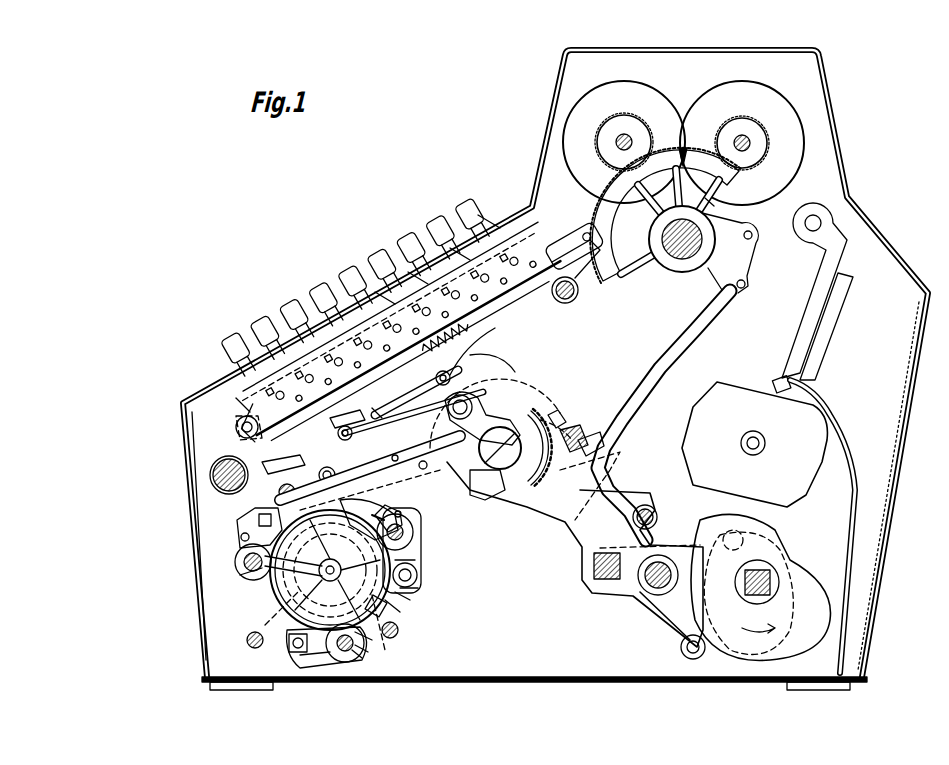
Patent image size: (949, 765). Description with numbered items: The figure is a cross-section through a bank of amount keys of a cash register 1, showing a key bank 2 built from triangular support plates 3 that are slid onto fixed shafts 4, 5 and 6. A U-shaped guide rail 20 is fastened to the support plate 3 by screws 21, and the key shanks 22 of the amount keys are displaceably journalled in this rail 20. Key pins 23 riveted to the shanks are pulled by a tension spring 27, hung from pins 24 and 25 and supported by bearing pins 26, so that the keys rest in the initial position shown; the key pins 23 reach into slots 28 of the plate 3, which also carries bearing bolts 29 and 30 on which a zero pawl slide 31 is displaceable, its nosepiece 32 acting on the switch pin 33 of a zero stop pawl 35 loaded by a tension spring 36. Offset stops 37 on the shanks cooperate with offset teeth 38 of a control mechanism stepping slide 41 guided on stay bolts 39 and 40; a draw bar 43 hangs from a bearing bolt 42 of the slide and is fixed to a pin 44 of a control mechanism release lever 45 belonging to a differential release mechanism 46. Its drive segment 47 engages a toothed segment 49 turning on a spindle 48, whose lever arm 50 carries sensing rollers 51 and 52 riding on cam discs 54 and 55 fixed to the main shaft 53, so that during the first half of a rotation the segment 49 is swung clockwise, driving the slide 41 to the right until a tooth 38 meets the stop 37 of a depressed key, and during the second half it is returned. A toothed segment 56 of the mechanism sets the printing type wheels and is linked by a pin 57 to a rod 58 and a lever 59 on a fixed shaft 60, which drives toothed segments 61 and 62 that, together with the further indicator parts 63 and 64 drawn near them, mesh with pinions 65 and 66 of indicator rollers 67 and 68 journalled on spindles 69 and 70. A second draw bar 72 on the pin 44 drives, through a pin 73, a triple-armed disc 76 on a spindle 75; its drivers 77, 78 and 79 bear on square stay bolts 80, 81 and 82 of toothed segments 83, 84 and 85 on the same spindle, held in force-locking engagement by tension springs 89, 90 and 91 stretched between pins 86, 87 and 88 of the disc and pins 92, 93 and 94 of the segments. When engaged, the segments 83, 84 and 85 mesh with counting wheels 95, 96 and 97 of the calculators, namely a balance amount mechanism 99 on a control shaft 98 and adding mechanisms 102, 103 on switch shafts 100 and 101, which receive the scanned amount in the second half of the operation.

The cash register 1 is at (866, 632).
The key bank 2 is at (200, 453).
The support plate 3 is at (553, 522).
The fixed shaft 4 is at (212, 478).
The fixed shaft 5 is at (572, 298).
The fixed shaft 6 is at (657, 515).
The U-shaped guide rail 20 is at (345, 298).
The screw 21 is at (245, 400).
The key shank 22 is at (258, 372).
The key pin 23 is at (245, 385).
The pin 24 is at (240, 405).
The pin 25 is at (490, 222).
The bearing pin 26 is at (462, 265).
The tension spring 27 is at (418, 270).
The slot 28 is at (385, 295).
The bearing bolt 29 is at (236, 427).
The bearing bolt 30 is at (280, 288).
The zero pawl slide 31 is at (330, 300).
The nosepiece 32 is at (270, 468).
The switch pin 33 is at (350, 418).
The zero stop pawl 35 is at (279, 492).
The tension spring 36 is at (420, 455).
The offset stop 37 is at (425, 392).
The tooth 38 is at (380, 407).
The stay bolt 39 is at (395, 455).
The stay bolt 40 is at (495, 365).
The control mechanism stepping slide 41 is at (466, 372).
The bearing bolt 42 is at (320, 478).
The draw bar 43 is at (472, 402).
The pin 44 is at (528, 398).
The control mechanism release lever 45 is at (490, 490).
The differential release mechanism 46 is at (552, 412).
The drive segment 47 is at (568, 428).
The spindle 48 is at (650, 582).
The toothed segment 49 is at (585, 438).
The lever arm 50 is at (650, 628).
The sensing roller 51 is at (722, 522).
The sensing roller 52 is at (695, 660).
The main shaft 53 is at (768, 575).
The cam disc 54 is at (795, 580).
The cam disc 55 is at (848, 570).
The toothed segment 56 is at (518, 374).
The pin 57 is at (600, 455).
The rod 58 is at (673, 345).
The lever 59 is at (752, 242).
The fixed shaft 60 is at (682, 262).
The toothed segment 61 is at (624, 270).
The toothed segment 62 is at (712, 212).
The sector gear 63 is at (602, 228).
The mesh point 64 is at (683, 148).
The pinion 65 is at (603, 120).
The pinion 66 is at (740, 125).
The indicator roller 67 is at (570, 118).
The indicator roller 68 is at (800, 125).
The spindle 69 is at (624, 133).
The spindle 70 is at (750, 138).
The draw bar 72 is at (410, 482).
The pin 73 is at (330, 520).
The spindle 75 is at (262, 568).
The triple-armed disc 76 is at (400, 600).
The driver 77 is at (280, 585).
The driver 78 is at (360, 640).
The driver 79 is at (414, 535).
The square stay bolt 80 is at (262, 578).
The square stay bolt 81 is at (345, 662).
The square stay bolt 82 is at (418, 575).
The toothed segment 83 is at (252, 648).
The toothed segment 84 is at (398, 632).
The toothed segment 85 is at (410, 525).
The pin 86 is at (330, 658).
The pin 87 is at (405, 592).
The pin 88 is at (340, 482).
The tension spring 89 is at (292, 650).
The tension spring 90 is at (380, 608).
The tension spring 91 is at (405, 500).
The pin 92 is at (270, 610).
The pin 93 is at (380, 640).
The pin 94 is at (377, 504).
The counting wheel 95 is at (238, 560).
The counting wheel 96 is at (355, 650).
The counting wheel 97 is at (421, 552).
The control shaft 98 is at (420, 585).
The balance amount mechanism 99 is at (422, 565).
The switch shaft 100 is at (257, 520).
The switch shaft 101 is at (300, 660).
The adding mechanism 102 is at (242, 537).
The adding mechanism 103 is at (350, 655).